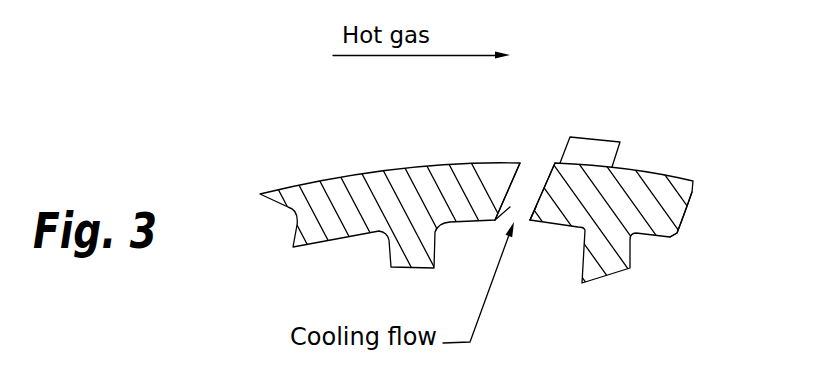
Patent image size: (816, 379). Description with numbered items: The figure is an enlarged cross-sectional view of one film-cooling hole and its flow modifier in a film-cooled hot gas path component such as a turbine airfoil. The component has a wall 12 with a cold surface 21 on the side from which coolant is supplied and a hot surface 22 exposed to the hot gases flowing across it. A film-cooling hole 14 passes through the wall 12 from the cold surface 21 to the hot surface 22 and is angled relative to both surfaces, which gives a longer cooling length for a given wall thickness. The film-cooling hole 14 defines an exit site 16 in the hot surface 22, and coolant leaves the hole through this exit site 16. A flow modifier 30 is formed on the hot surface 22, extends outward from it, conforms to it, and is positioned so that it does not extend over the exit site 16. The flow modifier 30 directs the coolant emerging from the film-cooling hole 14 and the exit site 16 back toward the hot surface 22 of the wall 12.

The wall 12 is at (668, 191).
The film-cooling hole 14 is at (510, 207).
The exit site 16 is at (537, 158).
The cold surface 21 is at (670, 237).
The hot surface 22 is at (360, 172).
The flow modifier 30 is at (596, 148).